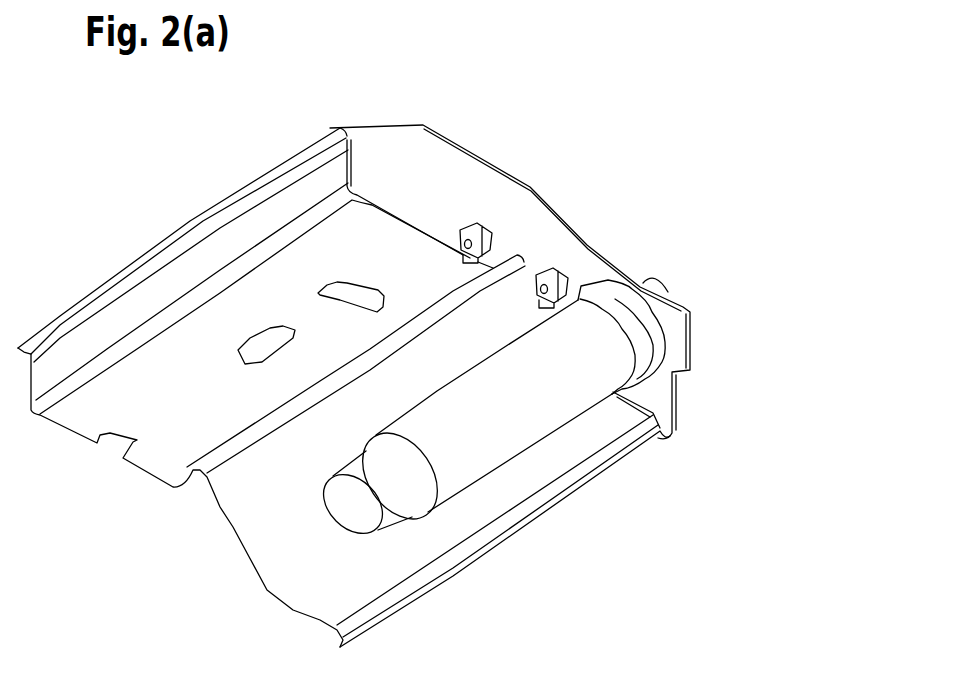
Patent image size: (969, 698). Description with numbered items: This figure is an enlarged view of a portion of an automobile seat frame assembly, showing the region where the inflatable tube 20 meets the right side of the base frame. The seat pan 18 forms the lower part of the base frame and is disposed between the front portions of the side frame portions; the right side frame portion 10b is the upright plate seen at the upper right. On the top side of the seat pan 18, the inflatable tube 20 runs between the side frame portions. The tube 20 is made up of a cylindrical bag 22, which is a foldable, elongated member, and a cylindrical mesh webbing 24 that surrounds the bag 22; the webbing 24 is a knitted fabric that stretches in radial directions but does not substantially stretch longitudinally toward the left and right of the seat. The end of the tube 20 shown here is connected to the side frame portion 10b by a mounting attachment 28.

The right side frame portion 10b is at (544, 224).
The seat pan 18 is at (253, 511).
The inflatable tube 20 is at (566, 441).
The cylindrical bag 22 is at (388, 513).
The cylindrical mesh webbing 24 is at (455, 468).
The mounting attachment 28 is at (616, 300).